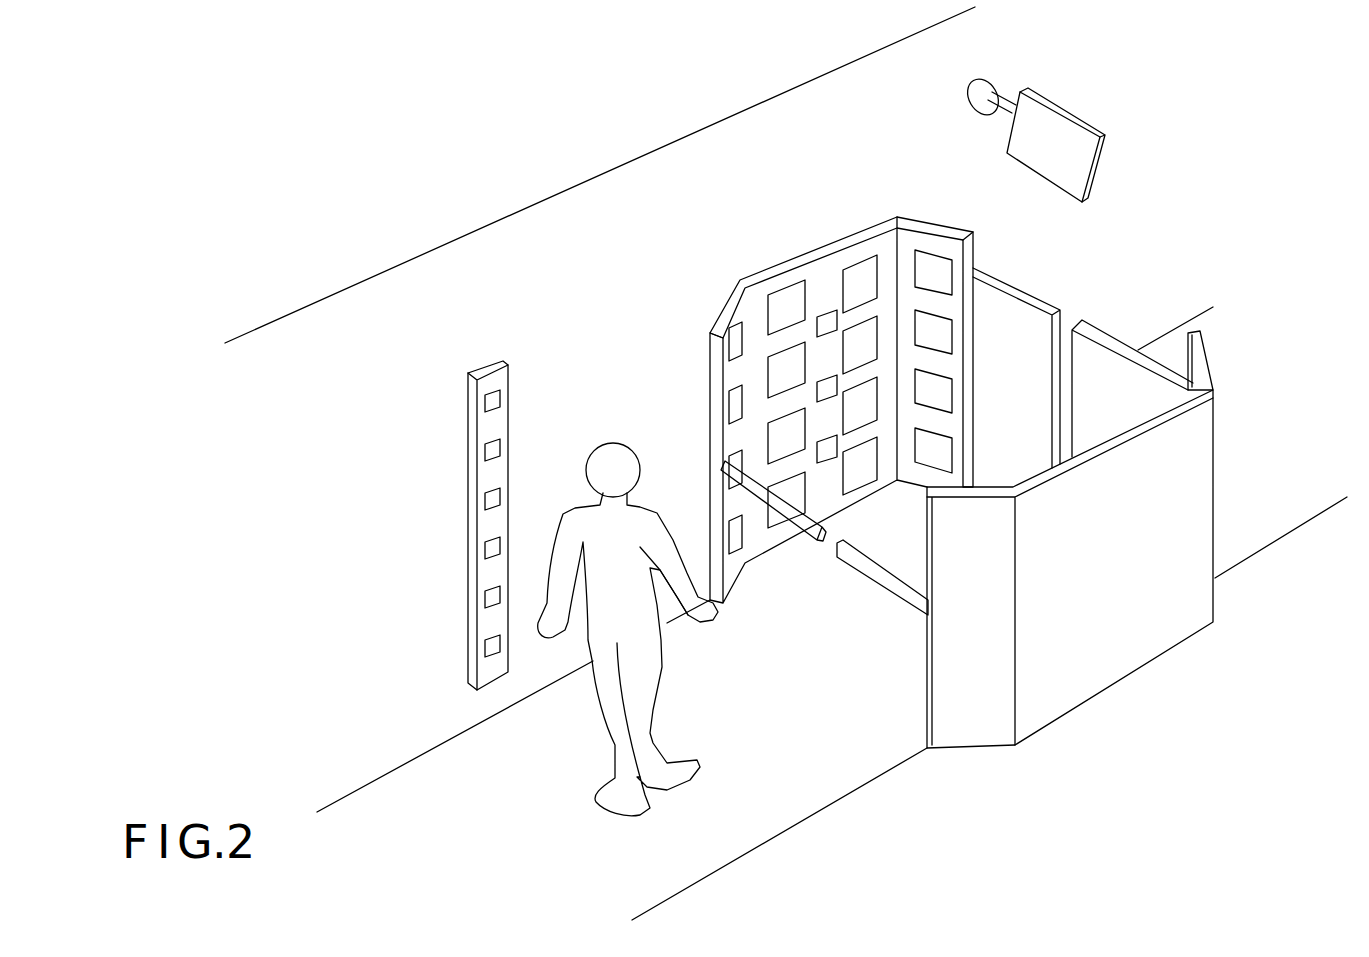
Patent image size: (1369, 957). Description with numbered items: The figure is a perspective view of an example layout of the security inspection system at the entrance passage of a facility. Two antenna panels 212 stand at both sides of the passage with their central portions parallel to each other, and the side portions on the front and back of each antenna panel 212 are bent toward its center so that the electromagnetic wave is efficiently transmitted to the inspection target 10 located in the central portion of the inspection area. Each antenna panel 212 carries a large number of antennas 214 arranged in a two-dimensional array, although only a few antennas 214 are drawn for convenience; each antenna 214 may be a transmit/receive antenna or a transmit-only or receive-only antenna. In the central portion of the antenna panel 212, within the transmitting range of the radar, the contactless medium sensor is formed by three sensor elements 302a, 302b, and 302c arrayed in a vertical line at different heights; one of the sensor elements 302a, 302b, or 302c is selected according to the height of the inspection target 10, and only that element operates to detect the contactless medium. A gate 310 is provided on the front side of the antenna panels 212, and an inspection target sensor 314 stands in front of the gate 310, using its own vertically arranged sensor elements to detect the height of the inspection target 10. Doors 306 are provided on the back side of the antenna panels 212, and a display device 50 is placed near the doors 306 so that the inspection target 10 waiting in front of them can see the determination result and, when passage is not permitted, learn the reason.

The inspection target 10 is at (613, 450).
The display device 50 is at (1065, 115).
The antenna panel 212 is at (720, 313).
The antenna 214 is at (787, 303).
The sensor element 302a is at (827, 307).
The sensor element 302b is at (823, 375).
The sensor element 302c is at (827, 432).
The door 306 is at (1018, 282).
The gate 310 is at (810, 533).
The inspection target sensor 314 is at (491, 366).